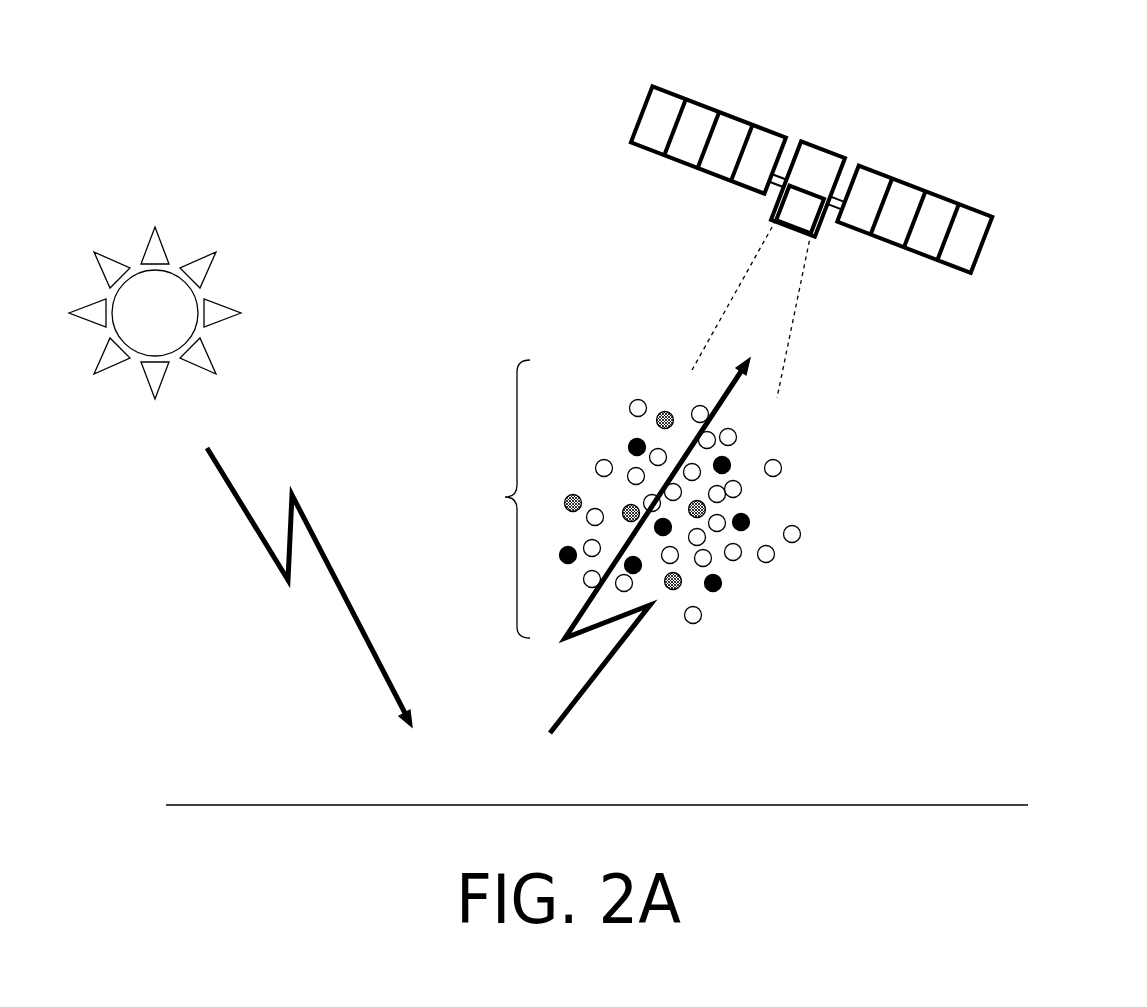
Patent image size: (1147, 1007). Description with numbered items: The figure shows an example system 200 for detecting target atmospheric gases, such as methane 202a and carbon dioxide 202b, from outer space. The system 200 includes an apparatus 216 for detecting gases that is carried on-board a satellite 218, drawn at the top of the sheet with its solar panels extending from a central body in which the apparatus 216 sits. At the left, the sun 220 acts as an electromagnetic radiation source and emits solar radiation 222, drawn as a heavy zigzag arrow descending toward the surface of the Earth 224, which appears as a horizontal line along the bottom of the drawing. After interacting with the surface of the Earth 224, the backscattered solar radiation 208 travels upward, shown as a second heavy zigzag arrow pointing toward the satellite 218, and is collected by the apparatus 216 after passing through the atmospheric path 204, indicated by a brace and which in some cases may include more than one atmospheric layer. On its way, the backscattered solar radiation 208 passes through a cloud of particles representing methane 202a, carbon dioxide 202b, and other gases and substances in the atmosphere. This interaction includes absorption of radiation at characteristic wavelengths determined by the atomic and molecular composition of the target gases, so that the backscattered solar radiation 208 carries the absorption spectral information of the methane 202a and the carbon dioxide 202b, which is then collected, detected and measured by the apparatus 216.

The system 200 is at (317, 124).
The methane 202a is at (757, 496).
The carbon dioxide 202b is at (571, 534).
The atmospheric path 204 is at (564, 499).
The backscattered solar radiation 208 is at (603, 687).
The apparatus 216 is at (816, 180).
The satellite 218 is at (974, 192).
The sun 220 is at (192, 310).
The solar radiation 222 is at (309, 587).
The Earth 224 is at (597, 776).